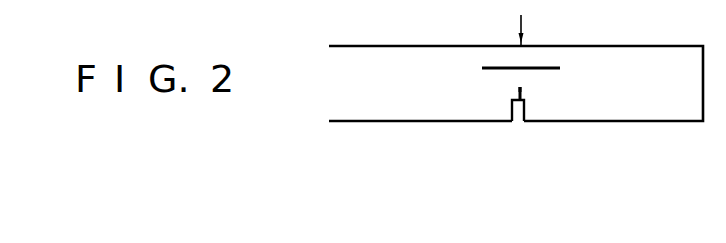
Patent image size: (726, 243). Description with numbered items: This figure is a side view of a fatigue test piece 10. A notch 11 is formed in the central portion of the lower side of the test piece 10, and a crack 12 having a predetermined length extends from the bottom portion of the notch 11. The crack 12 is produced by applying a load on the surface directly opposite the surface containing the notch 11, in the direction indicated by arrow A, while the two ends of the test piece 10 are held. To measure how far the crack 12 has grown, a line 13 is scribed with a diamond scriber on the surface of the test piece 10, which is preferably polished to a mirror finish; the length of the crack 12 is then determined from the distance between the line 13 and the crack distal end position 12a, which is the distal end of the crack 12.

The substrate 10 is at (672, 47).
The opening 11 is at (517, 122).
The projection 12 is at (524, 93).
The tip of projection 12a is at (517, 90).
The bar electrode 13 is at (546, 67).
The direction arrow A is at (518, 22).